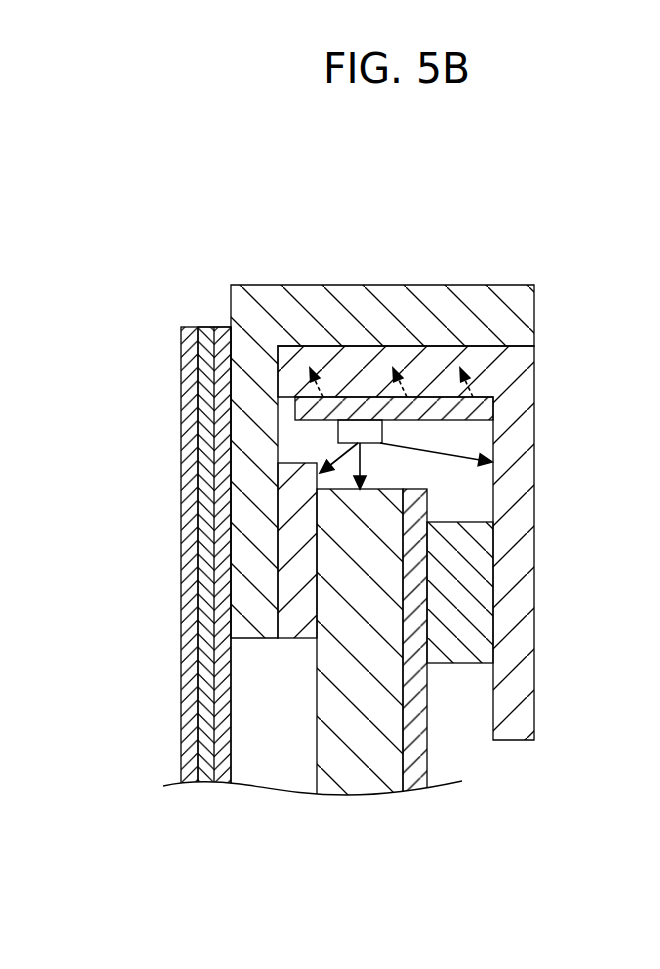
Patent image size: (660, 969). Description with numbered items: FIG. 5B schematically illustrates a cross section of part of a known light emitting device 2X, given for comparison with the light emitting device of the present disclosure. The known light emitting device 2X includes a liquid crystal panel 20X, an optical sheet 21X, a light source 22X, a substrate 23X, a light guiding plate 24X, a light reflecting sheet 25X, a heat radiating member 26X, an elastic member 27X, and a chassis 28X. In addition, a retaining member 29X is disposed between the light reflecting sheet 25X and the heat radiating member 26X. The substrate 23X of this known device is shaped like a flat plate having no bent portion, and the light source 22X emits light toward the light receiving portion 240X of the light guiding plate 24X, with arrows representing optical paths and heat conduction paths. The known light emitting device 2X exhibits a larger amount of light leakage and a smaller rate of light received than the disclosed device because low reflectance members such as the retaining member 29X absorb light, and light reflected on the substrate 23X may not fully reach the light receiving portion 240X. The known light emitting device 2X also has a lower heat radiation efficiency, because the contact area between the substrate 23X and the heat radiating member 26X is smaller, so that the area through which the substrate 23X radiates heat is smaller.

The known light emitting device 2X is at (187, 153).
The liquid crystal panel 20X is at (183, 703).
The optical sheet 21X is at (224, 568).
The light source 22X is at (374, 434).
The substrate 23X is at (488, 408).
The light guiding plate 24X is at (392, 753).
The light reflecting sheet 25X is at (413, 681).
The heat radiating member 26X is at (515, 486).
The elastic member 27X is at (287, 493).
The chassis 28X is at (369, 316).
The retaining member 29X is at (455, 595).
The light receiving portion 240X is at (488, 644).